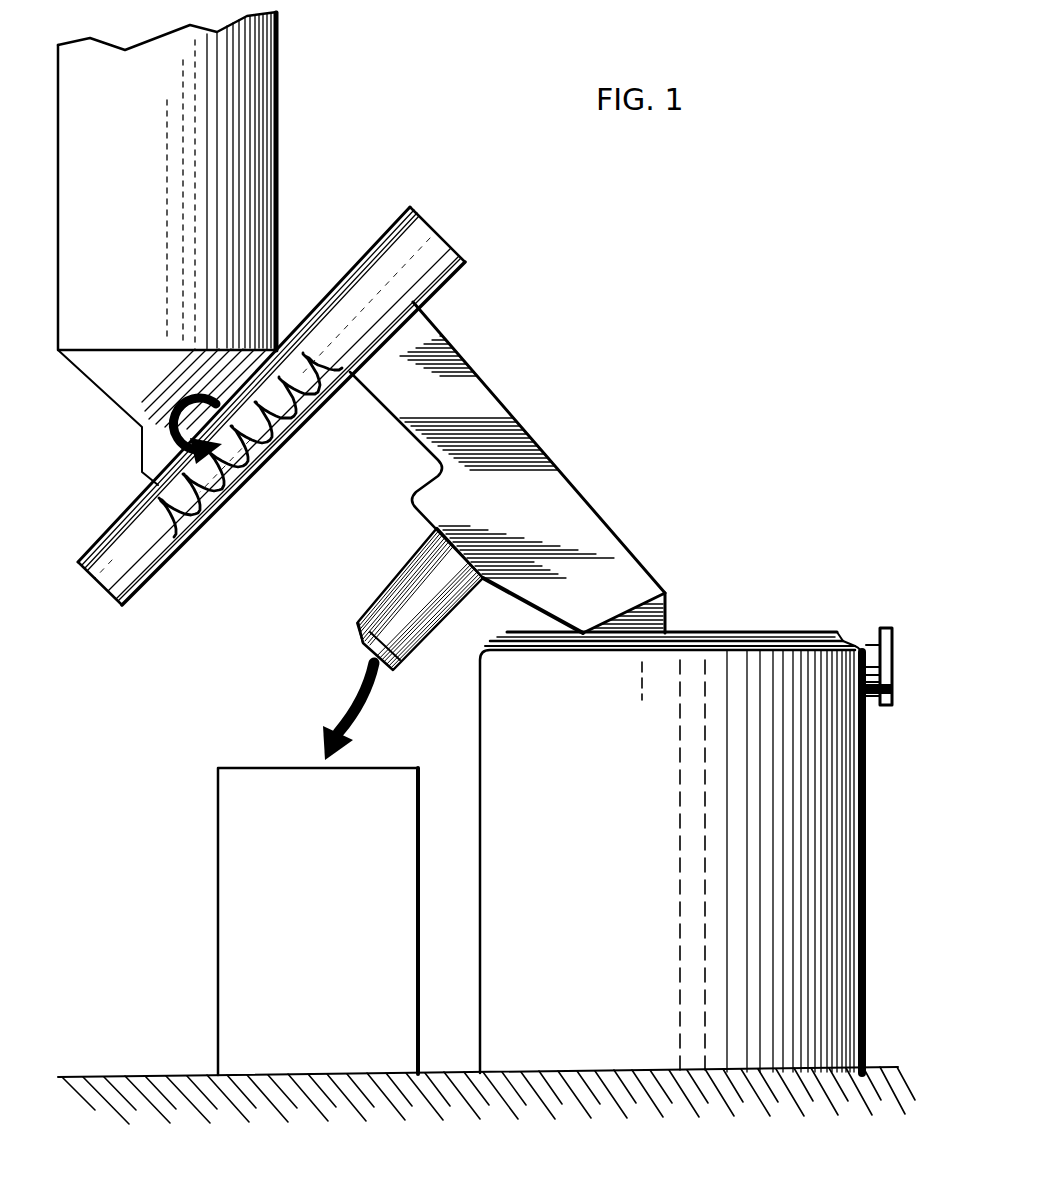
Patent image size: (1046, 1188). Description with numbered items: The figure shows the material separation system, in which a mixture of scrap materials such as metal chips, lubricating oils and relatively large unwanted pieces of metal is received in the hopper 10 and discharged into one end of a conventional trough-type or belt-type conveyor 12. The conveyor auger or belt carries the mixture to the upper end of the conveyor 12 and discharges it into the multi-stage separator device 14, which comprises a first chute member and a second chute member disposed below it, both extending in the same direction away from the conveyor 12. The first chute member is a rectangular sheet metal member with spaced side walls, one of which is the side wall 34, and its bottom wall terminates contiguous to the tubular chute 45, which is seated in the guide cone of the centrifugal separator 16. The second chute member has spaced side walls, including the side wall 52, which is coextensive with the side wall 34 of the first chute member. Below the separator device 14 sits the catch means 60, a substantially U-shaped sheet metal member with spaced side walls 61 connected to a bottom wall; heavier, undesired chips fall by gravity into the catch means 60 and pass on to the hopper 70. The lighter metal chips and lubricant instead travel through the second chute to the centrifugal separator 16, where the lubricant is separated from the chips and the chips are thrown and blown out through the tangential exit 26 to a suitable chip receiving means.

The hopper 10 is at (278, 117).
The conveyor 12 is at (356, 266).
The multi-stage separator device 14 is at (538, 440).
The side wall 34 is at (449, 360).
The tubular chute 45 is at (665, 618).
The side wall 52 is at (520, 583).
The catch means 60 is at (410, 655).
The side walls 61 is at (359, 636).
The centrifugal separator 16 is at (768, 632).
The tangential exit 26 is at (876, 640).
The hopper 70 is at (232, 858).